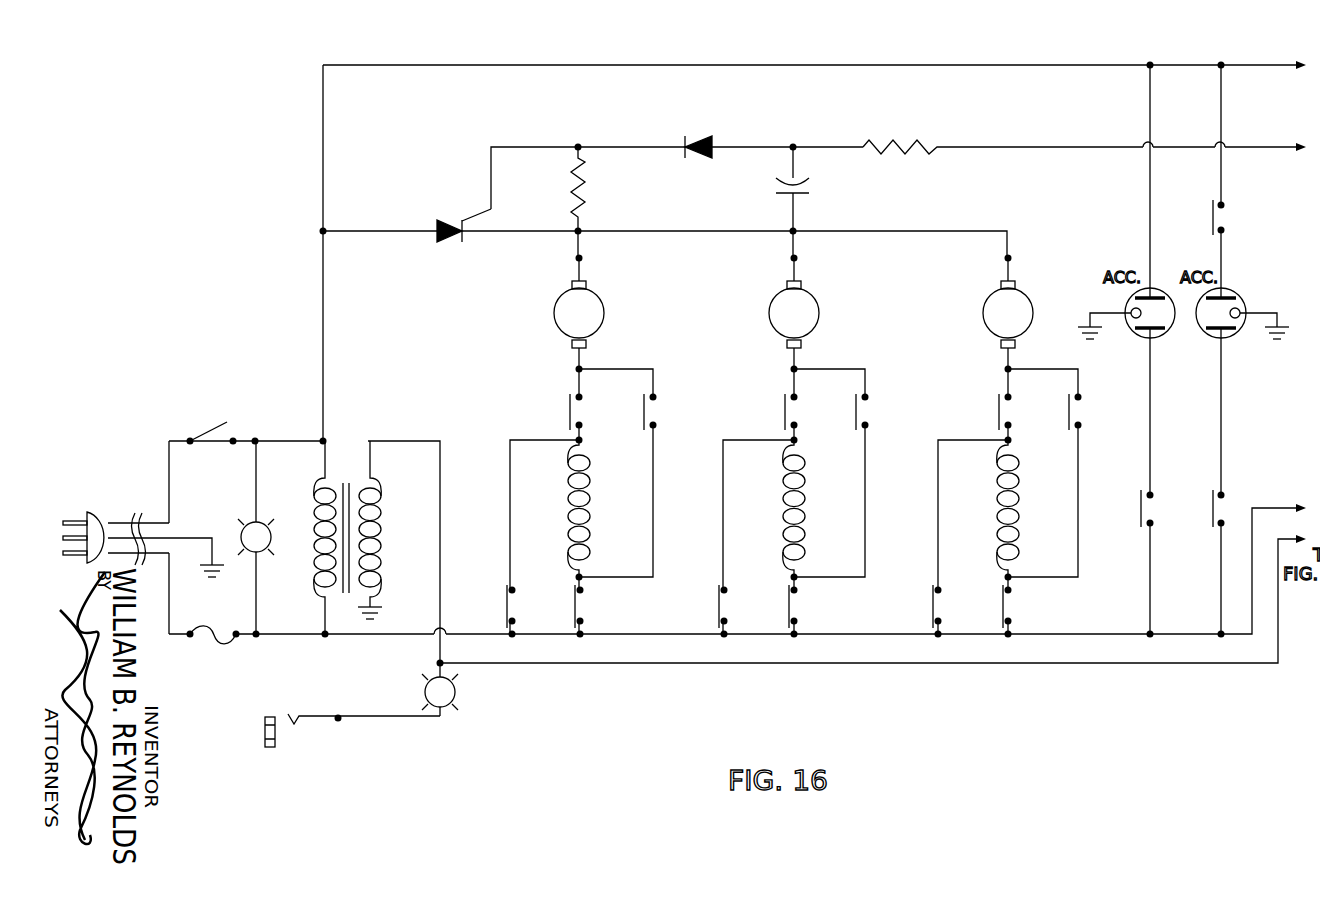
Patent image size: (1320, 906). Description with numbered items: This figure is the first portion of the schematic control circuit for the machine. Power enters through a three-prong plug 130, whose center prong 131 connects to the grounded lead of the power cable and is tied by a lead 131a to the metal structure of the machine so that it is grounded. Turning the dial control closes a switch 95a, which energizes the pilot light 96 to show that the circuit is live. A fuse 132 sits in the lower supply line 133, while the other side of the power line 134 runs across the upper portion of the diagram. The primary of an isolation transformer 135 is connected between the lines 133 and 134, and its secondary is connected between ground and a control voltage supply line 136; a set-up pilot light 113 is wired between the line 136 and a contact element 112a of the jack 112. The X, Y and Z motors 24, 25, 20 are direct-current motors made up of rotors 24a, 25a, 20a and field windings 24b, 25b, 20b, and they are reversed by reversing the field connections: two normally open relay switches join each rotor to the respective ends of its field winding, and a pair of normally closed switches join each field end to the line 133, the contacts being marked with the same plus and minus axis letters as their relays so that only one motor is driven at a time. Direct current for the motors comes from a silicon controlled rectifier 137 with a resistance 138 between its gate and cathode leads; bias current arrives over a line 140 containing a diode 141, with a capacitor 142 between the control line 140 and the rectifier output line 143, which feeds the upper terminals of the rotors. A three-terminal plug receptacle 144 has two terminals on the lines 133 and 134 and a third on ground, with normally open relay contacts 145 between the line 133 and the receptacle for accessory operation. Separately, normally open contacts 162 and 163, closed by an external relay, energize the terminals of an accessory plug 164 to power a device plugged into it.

The power line 134 is at (953, 65).
The control line 140 is at (1000, 147).
The diode 141 is at (707, 130).
The silicon controlled rectifier 137 is at (446, 218).
The resistance 138 is at (583, 187).
The capacitor 142 is at (776, 192).
The output line of the rectifier 143 is at (652, 231).
The rotor 24a is at (604, 318).
The X-axis motor 24 is at (640, 360).
The field winding 24b is at (590, 489).
The rotor 25a is at (819, 318).
The Y-axis motor 25 is at (855, 360).
The field winding 25b is at (805, 489).
The rotor 20a is at (1033, 318).
The Z-axis motor 20 is at (1069, 360).
The field winding 20b is at (1019, 489).
The normally open contacts 162 is at (1213, 220).
The three terminal plug receptacle 144 is at (1168, 331).
The accessory plug 164 is at (1240, 292).
The normally open relay contacts 145 is at (1141, 506).
The normally open contacts 163 is at (1213, 506).
The lower supply line 133 is at (476, 636).
The control voltage supply line 136 is at (397, 441).
The isolation transformer 135 is at (362, 477).
The switch 95a is at (212, 423).
The plug 130 is at (98, 520).
The center prong 131 is at (63, 526).
The lead 131a is at (182, 535).
The pilot light 96 is at (272, 541).
The fuse 132 is at (215, 628).
The jack 112 is at (258, 716).
The contact element 112a is at (312, 717).
The set-up pilot light 113 is at (457, 692).